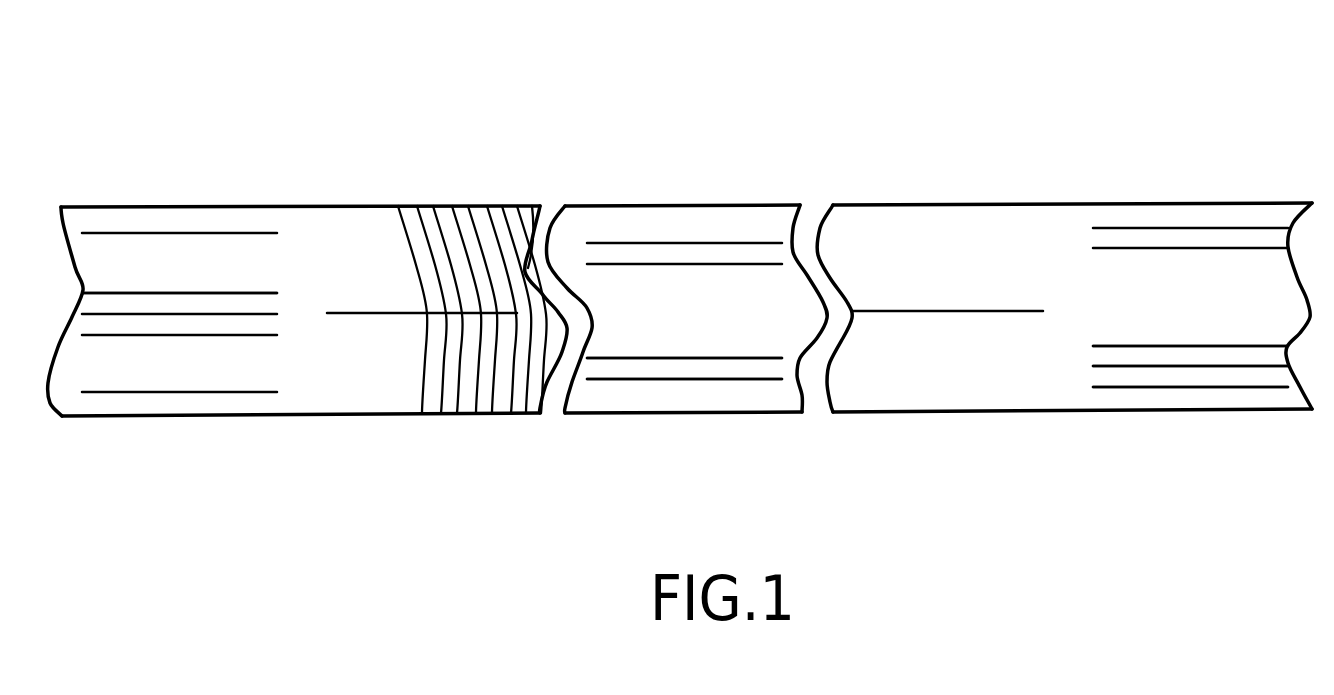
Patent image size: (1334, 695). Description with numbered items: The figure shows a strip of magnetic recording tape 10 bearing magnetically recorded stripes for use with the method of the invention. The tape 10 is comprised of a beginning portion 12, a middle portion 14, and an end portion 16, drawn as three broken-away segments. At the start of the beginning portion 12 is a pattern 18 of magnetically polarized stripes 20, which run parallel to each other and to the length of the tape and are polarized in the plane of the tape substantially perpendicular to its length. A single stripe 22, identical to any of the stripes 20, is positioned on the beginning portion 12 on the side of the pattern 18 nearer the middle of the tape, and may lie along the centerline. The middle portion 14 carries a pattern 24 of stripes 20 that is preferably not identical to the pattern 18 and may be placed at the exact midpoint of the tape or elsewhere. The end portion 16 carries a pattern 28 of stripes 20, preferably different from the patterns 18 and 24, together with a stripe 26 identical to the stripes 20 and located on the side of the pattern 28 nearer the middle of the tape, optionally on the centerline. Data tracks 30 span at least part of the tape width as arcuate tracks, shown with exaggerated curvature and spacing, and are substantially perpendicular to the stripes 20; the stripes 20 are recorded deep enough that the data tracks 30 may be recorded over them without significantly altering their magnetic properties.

The magnetic recording tape 10 is at (680, 263).
The beginning portion 12 is at (308, 299).
The middle portion 14 is at (687, 296).
The end portion 16 is at (1064, 317).
The pattern 18 is at (221, 265).
The magnetically polarized stripes 20 is at (177, 233).
The stripe 22 is at (384, 314).
The pattern 24 is at (703, 379).
The stripe 26 is at (937, 312).
The pattern 28 is at (1229, 388).
The data tracks 30 is at (465, 388).